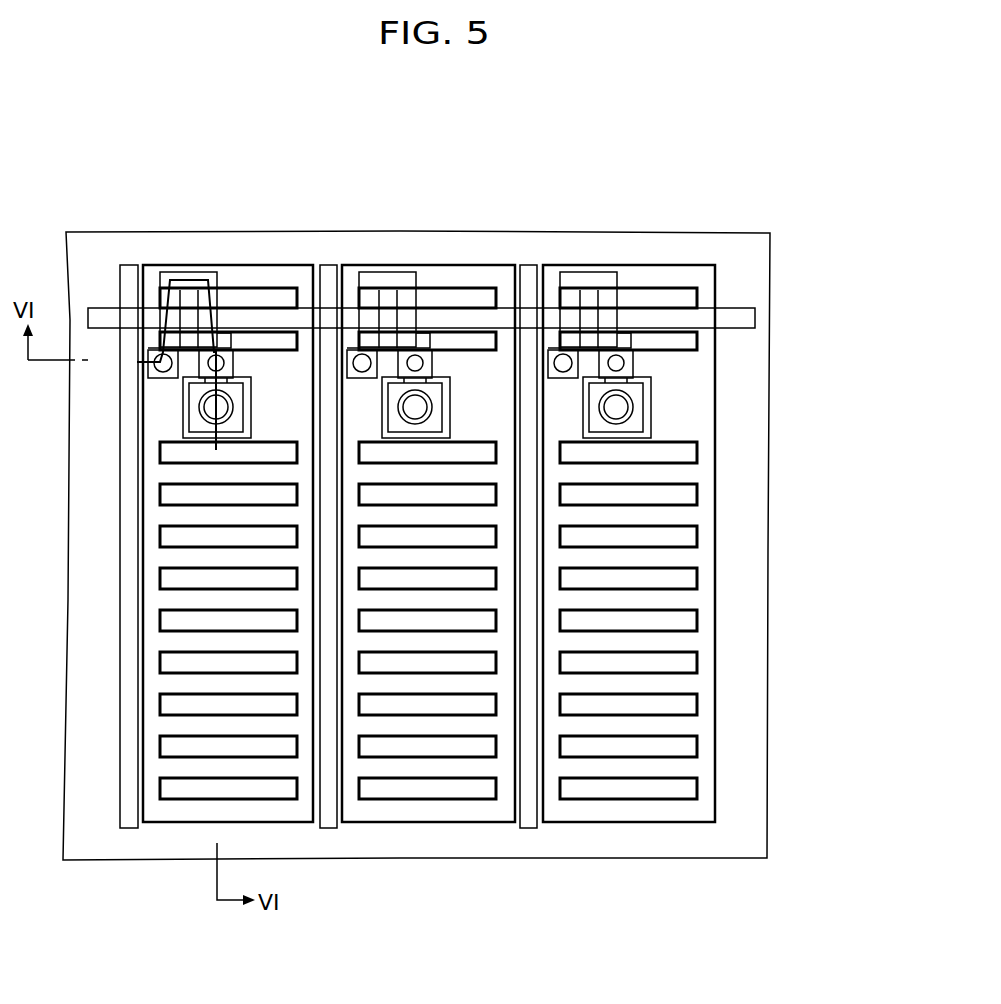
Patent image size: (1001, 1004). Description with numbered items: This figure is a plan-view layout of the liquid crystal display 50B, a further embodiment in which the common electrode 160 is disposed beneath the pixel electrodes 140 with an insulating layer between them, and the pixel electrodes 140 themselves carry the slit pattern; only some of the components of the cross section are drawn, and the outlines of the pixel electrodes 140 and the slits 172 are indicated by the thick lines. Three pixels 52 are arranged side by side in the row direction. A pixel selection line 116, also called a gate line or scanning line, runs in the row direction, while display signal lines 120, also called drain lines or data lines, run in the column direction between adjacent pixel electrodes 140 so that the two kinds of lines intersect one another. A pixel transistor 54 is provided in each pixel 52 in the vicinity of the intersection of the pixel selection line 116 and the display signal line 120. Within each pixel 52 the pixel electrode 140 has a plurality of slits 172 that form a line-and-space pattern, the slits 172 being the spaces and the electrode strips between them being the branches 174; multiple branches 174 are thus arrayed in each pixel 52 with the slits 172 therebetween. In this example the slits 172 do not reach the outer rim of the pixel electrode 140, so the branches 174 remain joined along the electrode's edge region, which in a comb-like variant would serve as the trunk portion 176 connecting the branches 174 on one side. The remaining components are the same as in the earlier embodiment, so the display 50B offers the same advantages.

The liquid crystal display 50B is at (88, 140).
The pixel 52 is at (513, 541).
The pixel transistor 54 is at (186, 273).
The pixel selection line 116 is at (100, 318).
The display signal line 120 is at (131, 265).
The pixel electrode 140 is at (290, 815).
The common electrode 160 is at (737, 850).
The slit 172 is at (683, 662).
The branch 174 is at (690, 681).
The trunk portion 176 is at (553, 787).